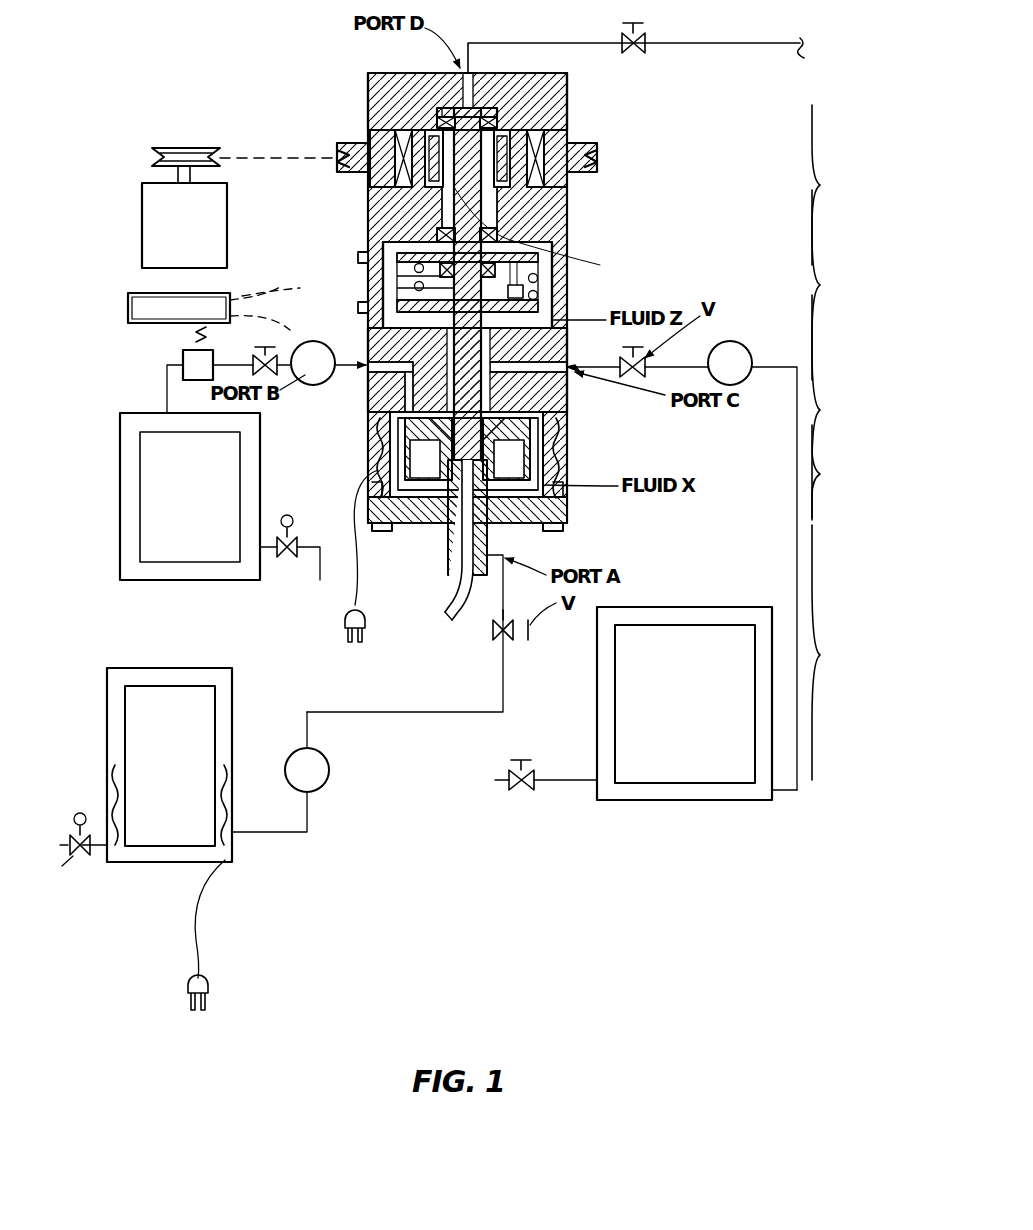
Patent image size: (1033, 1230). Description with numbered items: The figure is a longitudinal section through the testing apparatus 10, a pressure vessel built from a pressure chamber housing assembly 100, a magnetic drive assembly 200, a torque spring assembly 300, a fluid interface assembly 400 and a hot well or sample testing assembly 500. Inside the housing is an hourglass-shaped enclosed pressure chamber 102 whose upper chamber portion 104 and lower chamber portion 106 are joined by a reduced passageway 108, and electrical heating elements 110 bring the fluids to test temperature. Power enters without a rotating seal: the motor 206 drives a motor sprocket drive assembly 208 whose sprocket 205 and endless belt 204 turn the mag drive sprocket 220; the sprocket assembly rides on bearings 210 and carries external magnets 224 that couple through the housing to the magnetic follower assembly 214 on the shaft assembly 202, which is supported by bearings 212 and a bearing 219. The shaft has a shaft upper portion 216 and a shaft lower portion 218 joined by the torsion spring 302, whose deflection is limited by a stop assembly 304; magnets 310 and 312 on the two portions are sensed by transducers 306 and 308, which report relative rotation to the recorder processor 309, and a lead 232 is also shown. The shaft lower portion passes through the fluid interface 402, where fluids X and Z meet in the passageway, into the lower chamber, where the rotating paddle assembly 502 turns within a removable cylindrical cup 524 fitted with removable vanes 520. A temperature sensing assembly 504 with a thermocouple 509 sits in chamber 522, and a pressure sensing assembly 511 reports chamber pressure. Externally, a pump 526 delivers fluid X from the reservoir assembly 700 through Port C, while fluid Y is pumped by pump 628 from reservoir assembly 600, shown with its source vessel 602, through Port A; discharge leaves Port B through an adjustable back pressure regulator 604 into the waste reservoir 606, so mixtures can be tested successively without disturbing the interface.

The testing apparatus 10 is at (295, 43).
The pressure chamber housing assembly 100 is at (366, 97).
The enclosed pressure chamber 102 is at (400, 110).
The upper chamber portion 104 is at (555, 345).
The lower chamber portion 106 is at (535, 430).
The passageway 108 is at (540, 372).
The electrical heating elements 110 is at (385, 447).
The magnetic drive assembly 200 is at (822, 183).
The shaft assembly 202 is at (482, 250).
The endless belt 204 is at (272, 158).
The sprocket 205 is at (168, 148).
The motor 206 is at (185, 225).
The motor sprocket drive assembly 208 is at (218, 92).
The bearings 210 is at (567, 118).
The bearings 212 is at (555, 90).
The magnetic follower assembly 214 is at (425, 186).
The shaft upper portion 216 is at (523, 270).
The shaft lower portion 218 is at (388, 398).
The bearing 219 is at (500, 235).
The mag drive sprocket 220 is at (590, 143).
The external magnets 224 is at (515, 195).
The sensor lead 232 is at (505, 230).
The torque spring assembly 300 is at (822, 285).
The torsion spring 302 is at (540, 290).
The stop assembly 304 is at (538, 305).
The transducer 306 is at (405, 275).
The transducer 308 is at (357, 308).
The recorder processor 309 is at (127, 308).
The magnet 310 is at (357, 258).
The magnet 312 is at (360, 285).
The fluid interface assembly 400 is at (822, 410).
The fluid interface 402 is at (400, 347).
The hot well or sample testing assembly 500 is at (822, 472).
The rotating paddle assembly 502 is at (530, 452).
The temperature sensing assembly 504 is at (450, 648).
The thermocouple 509 is at (455, 598).
The pressure sensing assembly 511 is at (335, 395).
The removable vanes 520 is at (540, 420).
The chamber 522 is at (455, 550).
The removable cylindrical cup 524 is at (375, 478).
The pump 526 is at (735, 340).
The reservoir assembly 600 is at (822, 655).
The fluid Y source 602 is at (222, 705).
The adjustable back pressure regulator 604 is at (182, 356).
The waste reservoir 606 is at (118, 470).
The pump 628 is at (330, 775).
The reservoir assembly 700 is at (700, 802).